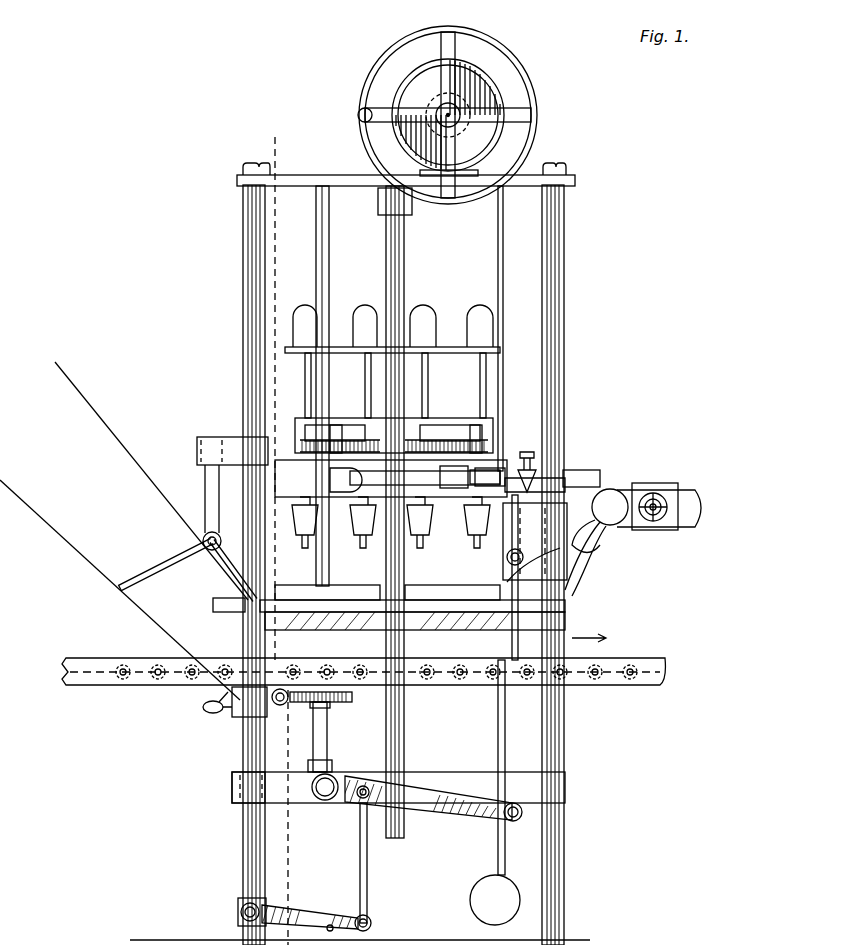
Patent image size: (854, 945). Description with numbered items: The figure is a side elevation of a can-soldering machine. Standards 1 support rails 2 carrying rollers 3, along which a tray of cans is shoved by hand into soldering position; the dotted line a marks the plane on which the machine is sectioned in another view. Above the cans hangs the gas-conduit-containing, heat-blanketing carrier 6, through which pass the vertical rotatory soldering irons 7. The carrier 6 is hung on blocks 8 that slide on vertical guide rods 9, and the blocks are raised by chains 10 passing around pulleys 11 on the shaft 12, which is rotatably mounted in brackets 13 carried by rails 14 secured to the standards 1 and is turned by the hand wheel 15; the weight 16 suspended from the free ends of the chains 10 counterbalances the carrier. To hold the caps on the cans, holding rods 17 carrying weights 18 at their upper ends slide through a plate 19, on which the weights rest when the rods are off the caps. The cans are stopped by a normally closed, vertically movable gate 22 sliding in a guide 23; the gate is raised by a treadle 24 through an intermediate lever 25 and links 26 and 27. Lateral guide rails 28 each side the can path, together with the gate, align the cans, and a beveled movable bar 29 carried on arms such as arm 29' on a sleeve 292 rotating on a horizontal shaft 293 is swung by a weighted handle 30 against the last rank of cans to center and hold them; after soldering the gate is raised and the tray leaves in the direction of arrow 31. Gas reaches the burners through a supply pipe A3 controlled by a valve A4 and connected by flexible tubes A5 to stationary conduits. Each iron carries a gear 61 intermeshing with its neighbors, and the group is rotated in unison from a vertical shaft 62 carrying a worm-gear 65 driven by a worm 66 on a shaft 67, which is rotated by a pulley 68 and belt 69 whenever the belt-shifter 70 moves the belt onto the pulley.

The standards 1 is at (254, 292).
The rails 2 is at (138, 690).
The rollers 3 is at (152, 662).
The carrier 6 is at (326, 480).
The soldering irons 7 is at (322, 540).
The blocks 8 is at (398, 435).
The vertical guide rods 9 is at (408, 302).
The chains 10 is at (500, 286).
The pulleys 11 is at (460, 78).
The shaft 12 is at (456, 113).
The brackets 13 is at (500, 165).
The rails 14 is at (345, 178).
The hand wheel 15 is at (530, 125).
The weight 16 is at (482, 878).
The holding rods 17 is at (312, 402).
The weights 18 is at (365, 312).
The plate 19 is at (498, 430).
The gate 22 is at (570, 604).
The guide 23 is at (562, 568).
The treadle 24 is at (252, 904).
The intermediate lever 25 is at (432, 793).
The link 26 is at (367, 872).
The link 27 is at (498, 698).
The lateral guide rails 28 is at (214, 606).
The movable bar 29 is at (231, 666).
The arm 29' is at (212, 573).
The sleeve 292 is at (203, 542).
The horizontal shaft 293 is at (210, 530).
The handle 30 is at (158, 574).
The arrow 31 is at (602, 638).
The gear 61 is at (340, 428).
The vertical rotatable shaft 62 is at (280, 706).
The worm-gear 65 is at (348, 700).
The worm 66 is at (326, 740).
The shaft 67 is at (290, 772).
The pulley 68 is at (262, 776).
The belt 69 is at (100, 586).
The belt-shifter 70 is at (213, 713).
The supply pipe A3 is at (476, 486).
The valve A4 is at (532, 452).
The flexible tubes A5 is at (605, 570).
The section line a— a is at (280, 530).